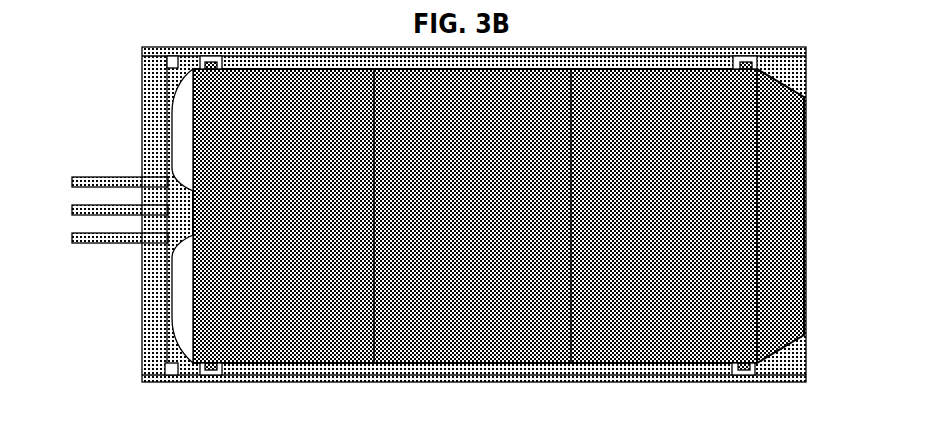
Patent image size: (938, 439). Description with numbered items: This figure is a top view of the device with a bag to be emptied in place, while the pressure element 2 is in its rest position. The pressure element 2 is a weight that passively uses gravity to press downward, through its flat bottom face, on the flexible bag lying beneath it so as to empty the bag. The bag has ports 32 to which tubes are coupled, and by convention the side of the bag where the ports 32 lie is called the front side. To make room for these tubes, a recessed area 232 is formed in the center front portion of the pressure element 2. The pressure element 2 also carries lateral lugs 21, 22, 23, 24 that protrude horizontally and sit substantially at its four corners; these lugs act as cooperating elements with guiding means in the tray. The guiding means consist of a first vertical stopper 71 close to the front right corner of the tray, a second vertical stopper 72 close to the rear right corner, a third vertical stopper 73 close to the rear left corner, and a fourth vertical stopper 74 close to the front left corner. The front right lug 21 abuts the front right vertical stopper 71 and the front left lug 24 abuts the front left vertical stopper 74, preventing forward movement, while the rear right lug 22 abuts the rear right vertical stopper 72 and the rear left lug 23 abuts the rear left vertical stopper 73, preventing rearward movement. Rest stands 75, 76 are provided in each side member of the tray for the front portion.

The pressure element 2 is at (498, 216).
The front right lug 21 is at (212, 362).
The rear right lug 22 is at (745, 362).
The rear left lug 23 is at (212, 68).
The front left lug 24 is at (745, 68).
The ports 32 is at (136, 177).
The recessed area 232 is at (185, 232).
The first vertical stopper 71 is at (172, 376).
The second vertical stopper 72 is at (747, 376).
The third vertical stopper 73 is at (746, 56).
The fourth vertical stopper 74 is at (174, 56).
The rest stand 75 is at (212, 56).
The rest stand 76 is at (210, 377).